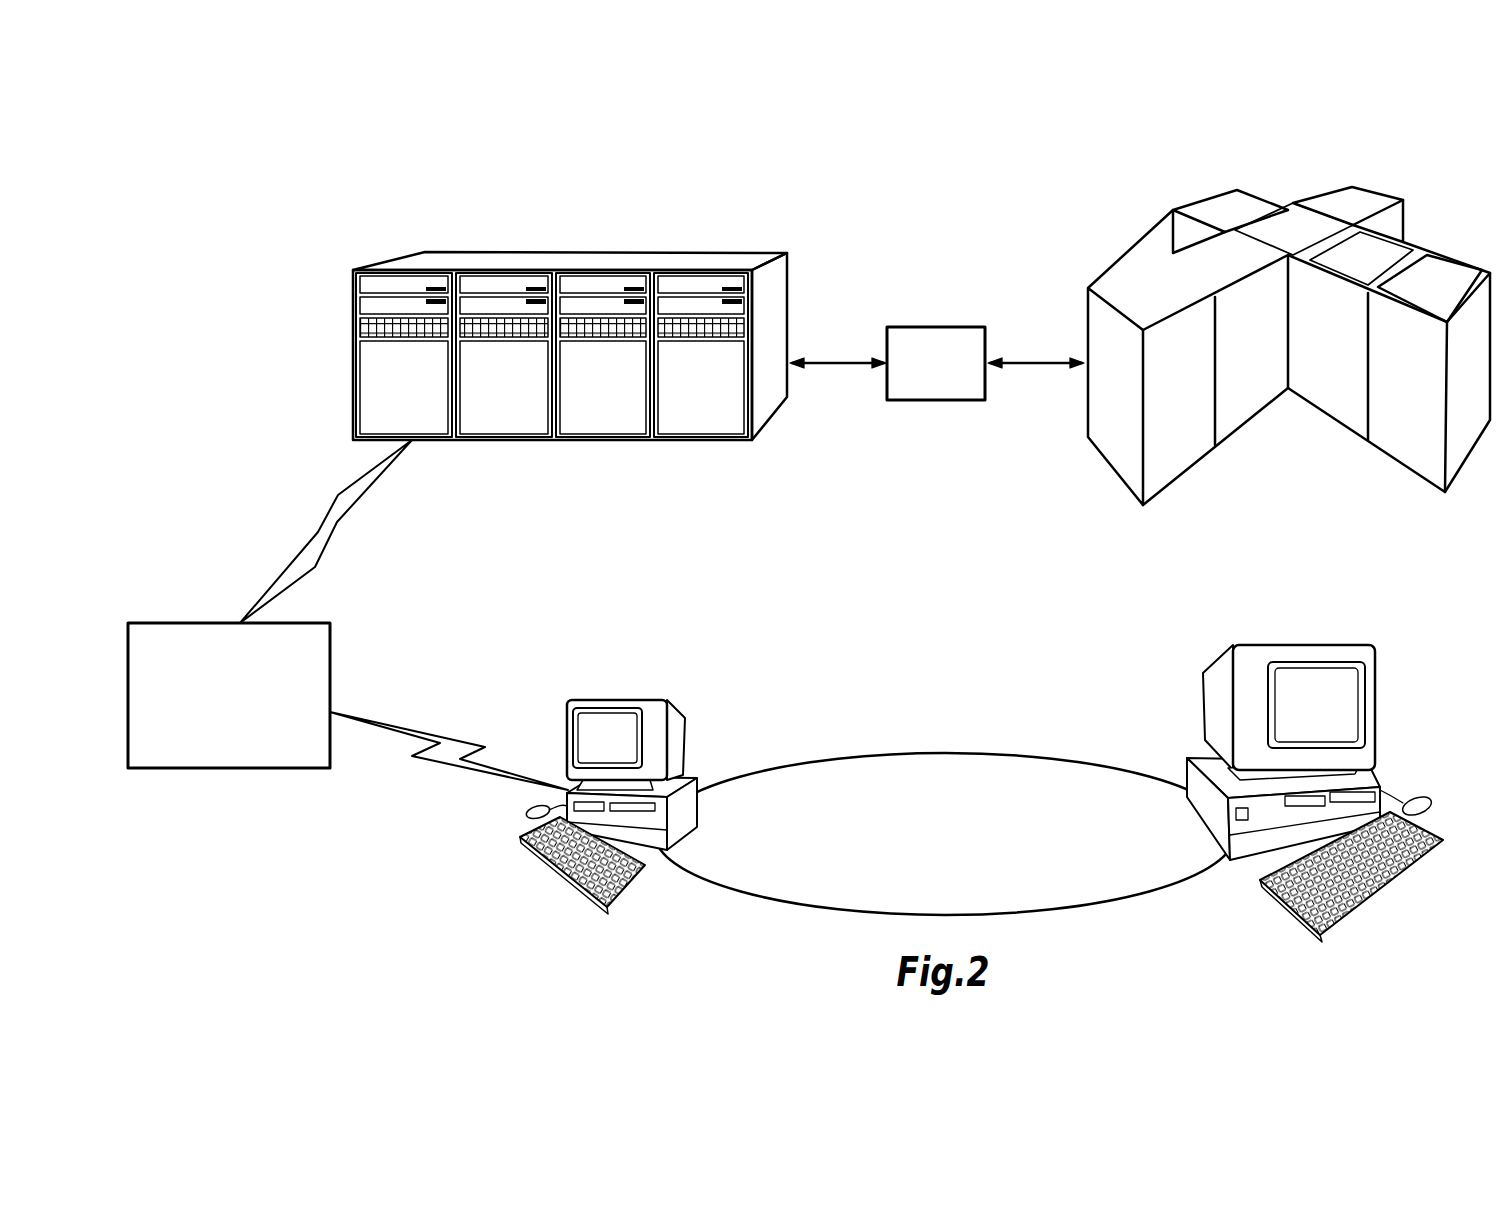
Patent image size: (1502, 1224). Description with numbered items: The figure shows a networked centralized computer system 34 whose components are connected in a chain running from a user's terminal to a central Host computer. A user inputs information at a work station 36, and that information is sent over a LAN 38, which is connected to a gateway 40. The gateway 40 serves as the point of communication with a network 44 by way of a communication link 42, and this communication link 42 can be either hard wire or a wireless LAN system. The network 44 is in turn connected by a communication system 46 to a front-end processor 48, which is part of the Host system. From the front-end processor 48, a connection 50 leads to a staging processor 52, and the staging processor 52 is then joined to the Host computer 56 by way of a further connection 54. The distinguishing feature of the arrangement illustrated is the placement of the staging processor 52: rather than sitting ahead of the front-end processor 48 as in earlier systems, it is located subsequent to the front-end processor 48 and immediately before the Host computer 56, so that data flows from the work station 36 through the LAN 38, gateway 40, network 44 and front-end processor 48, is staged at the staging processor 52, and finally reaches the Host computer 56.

The system 34 is at (392, 235).
The work station 36 is at (1360, 710).
The LAN 38 is at (922, 752).
The gateway 40 is at (683, 733).
The communication link 42 is at (433, 730).
The network 44 is at (317, 672).
The communication system 46 is at (365, 508).
The front-end processor 48 is at (627, 262).
The connection 50 is at (828, 361).
The staging processor 52 is at (933, 333).
The connection 54 is at (1032, 362).
The Host computer 56 is at (1380, 200).